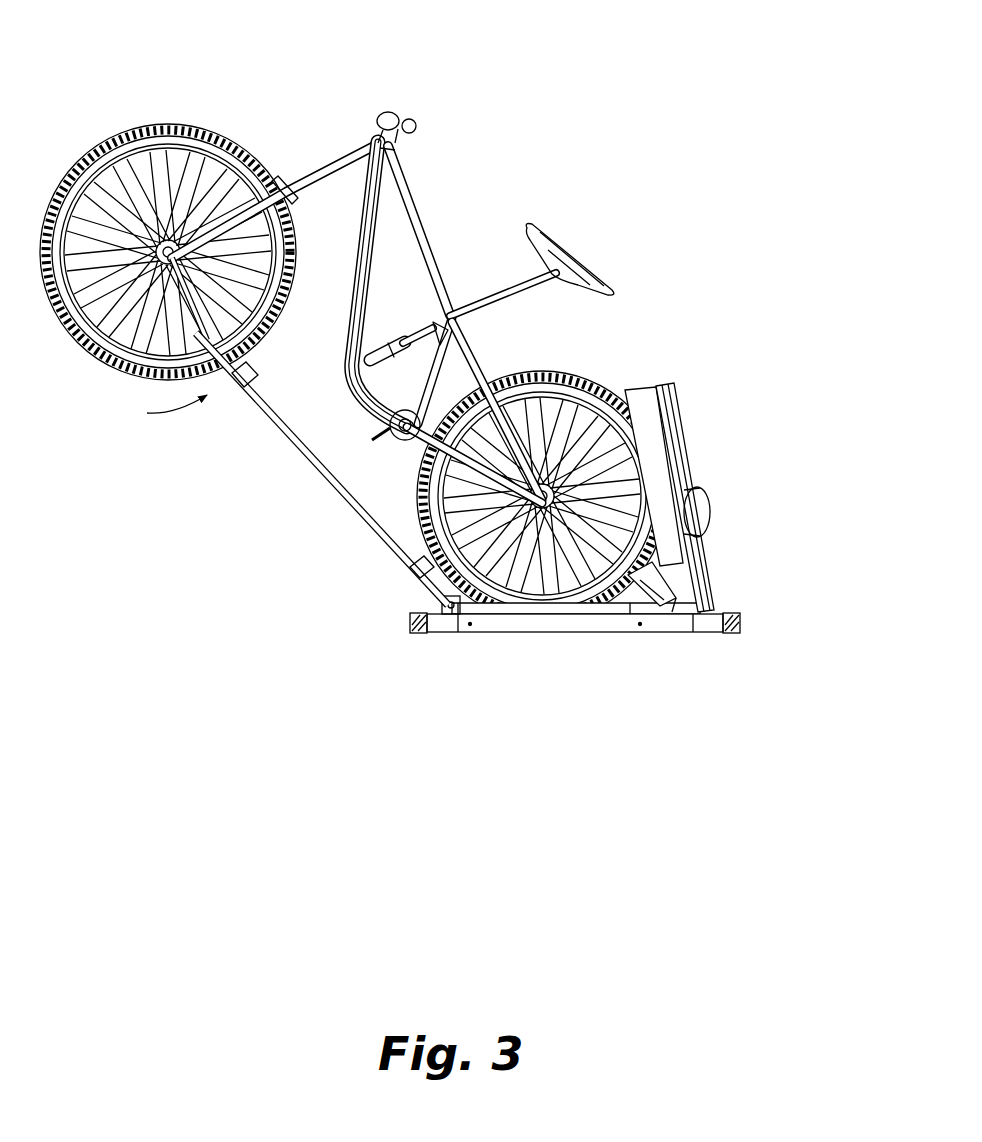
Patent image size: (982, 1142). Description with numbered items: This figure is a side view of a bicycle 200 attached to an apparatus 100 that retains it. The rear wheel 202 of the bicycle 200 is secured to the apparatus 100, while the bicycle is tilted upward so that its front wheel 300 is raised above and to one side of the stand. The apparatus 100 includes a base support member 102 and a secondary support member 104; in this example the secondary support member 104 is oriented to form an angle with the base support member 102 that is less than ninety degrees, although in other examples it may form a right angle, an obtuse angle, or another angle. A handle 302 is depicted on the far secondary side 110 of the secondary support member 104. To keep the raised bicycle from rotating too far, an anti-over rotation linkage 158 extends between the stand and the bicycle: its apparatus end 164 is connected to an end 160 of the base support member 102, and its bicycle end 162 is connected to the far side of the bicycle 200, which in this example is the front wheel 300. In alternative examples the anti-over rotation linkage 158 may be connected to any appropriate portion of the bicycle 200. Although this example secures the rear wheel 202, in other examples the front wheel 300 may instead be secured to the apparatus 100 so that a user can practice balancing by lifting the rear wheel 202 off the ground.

The apparatus 100 is at (806, 396).
The base support member 102 is at (538, 633).
The secondary support member 104 is at (648, 408).
The far secondary side 110 is at (700, 454).
The anti-over rotation linkage 158 is at (362, 512).
The end of the base support member 160 is at (408, 604).
The bicycle end 162 is at (162, 427).
The apparatus end 164 is at (400, 633).
The bicycle 200 is at (239, 66).
The rear wheel 202 is at (577, 390).
The front wheel 300 is at (110, 130).
The handle 302 is at (713, 518).